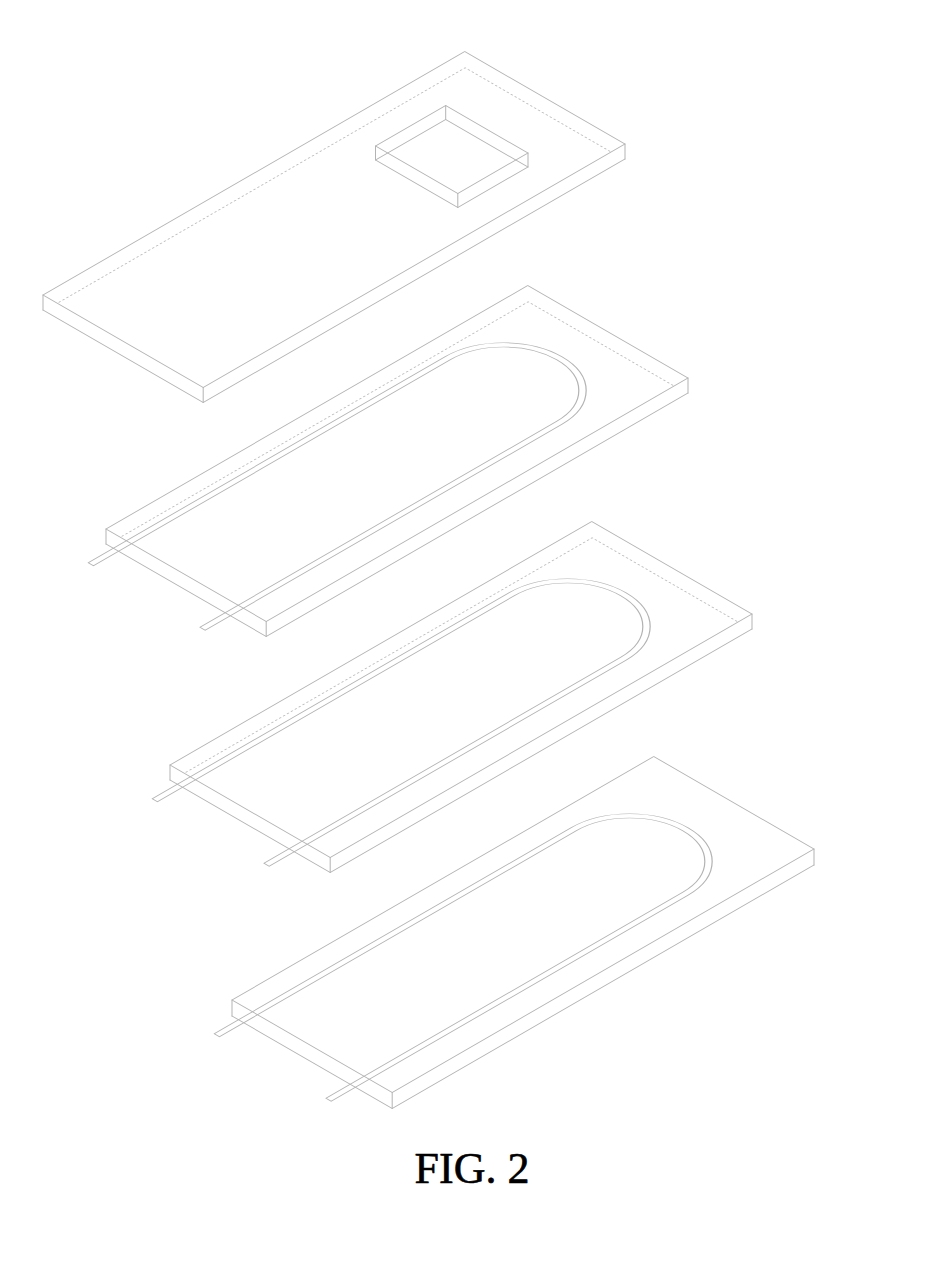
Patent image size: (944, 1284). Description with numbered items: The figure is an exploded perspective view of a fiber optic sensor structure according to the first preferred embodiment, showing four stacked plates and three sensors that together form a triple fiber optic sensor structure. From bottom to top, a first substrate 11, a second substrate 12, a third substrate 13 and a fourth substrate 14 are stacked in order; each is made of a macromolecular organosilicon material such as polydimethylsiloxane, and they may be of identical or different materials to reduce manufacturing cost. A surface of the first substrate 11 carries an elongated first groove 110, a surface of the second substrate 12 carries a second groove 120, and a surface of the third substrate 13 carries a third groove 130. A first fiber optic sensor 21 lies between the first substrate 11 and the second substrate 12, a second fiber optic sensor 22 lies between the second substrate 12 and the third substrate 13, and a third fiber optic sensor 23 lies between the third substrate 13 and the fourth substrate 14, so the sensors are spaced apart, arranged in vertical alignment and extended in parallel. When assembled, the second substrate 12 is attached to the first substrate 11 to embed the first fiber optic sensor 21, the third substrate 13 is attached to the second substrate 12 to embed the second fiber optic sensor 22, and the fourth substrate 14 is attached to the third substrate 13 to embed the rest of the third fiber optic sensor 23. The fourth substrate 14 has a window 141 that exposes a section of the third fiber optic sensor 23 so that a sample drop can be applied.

The first substrate 11 is at (523, 873).
The first groove 110 is at (760, 790).
The second substrate 12 is at (472, 642).
The second groove 120 is at (717, 563).
The third substrate 13 is at (407, 402).
The third groove 130 is at (650, 322).
The fourth substrate 14 is at (592, 152).
The window 141 is at (487, 156).
The first fiber optic sensor 21 is at (680, 823).
The second fiber optic sensor 22 is at (635, 597).
The third fiber optic sensor 23 is at (573, 363).